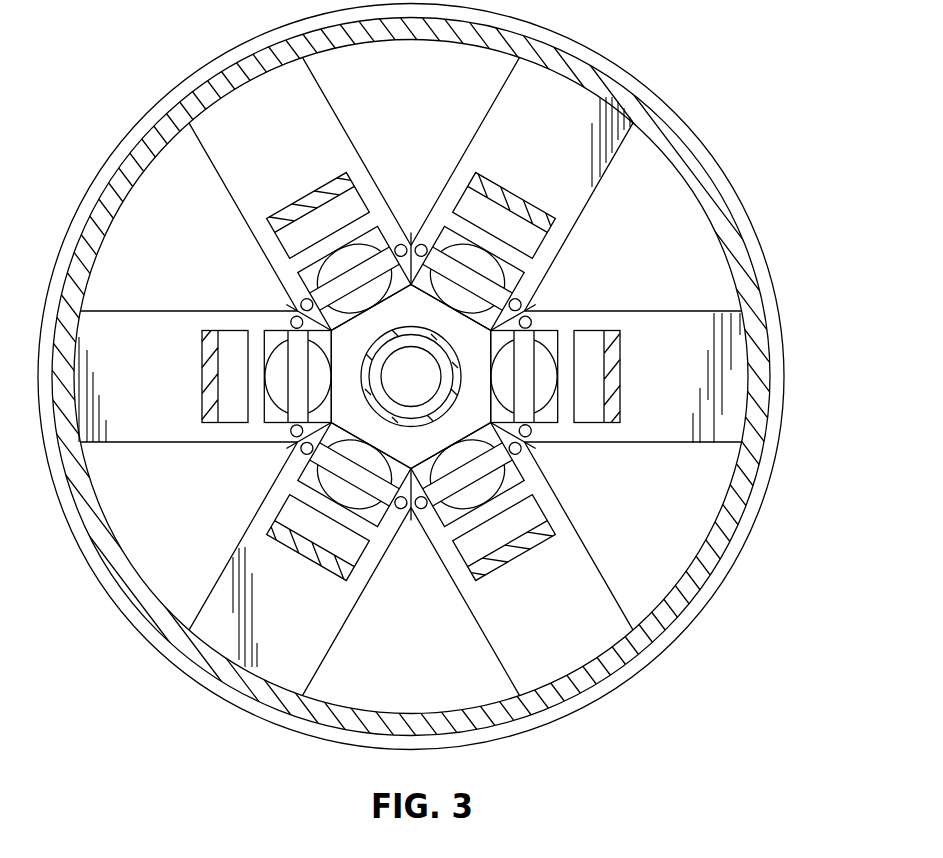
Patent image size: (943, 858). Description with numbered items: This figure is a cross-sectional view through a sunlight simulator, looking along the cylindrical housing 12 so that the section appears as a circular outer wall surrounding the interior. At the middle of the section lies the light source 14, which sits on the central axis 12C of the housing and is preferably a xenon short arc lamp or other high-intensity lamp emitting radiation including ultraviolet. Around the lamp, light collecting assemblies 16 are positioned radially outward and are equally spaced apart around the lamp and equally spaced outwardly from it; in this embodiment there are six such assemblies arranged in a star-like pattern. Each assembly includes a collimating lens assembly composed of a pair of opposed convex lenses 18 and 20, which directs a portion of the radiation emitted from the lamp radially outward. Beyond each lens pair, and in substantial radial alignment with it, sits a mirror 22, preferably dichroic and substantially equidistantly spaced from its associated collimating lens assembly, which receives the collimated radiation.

The housing 12 is at (727, 583).
The central axis 12C is at (412, 376).
The light source 14 is at (527, 446).
The light collecting assemblies 16 is at (368, 147).
The convex lens 18 is at (325, 259).
The convex lens 20 is at (410, 243).
The mirror 22 is at (290, 203).